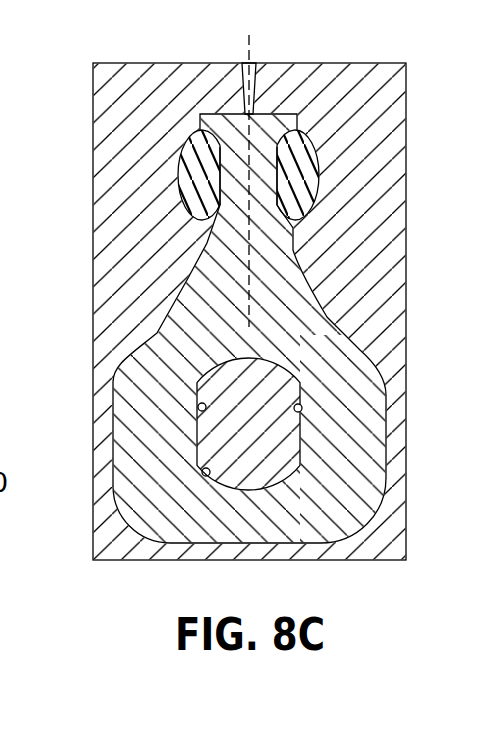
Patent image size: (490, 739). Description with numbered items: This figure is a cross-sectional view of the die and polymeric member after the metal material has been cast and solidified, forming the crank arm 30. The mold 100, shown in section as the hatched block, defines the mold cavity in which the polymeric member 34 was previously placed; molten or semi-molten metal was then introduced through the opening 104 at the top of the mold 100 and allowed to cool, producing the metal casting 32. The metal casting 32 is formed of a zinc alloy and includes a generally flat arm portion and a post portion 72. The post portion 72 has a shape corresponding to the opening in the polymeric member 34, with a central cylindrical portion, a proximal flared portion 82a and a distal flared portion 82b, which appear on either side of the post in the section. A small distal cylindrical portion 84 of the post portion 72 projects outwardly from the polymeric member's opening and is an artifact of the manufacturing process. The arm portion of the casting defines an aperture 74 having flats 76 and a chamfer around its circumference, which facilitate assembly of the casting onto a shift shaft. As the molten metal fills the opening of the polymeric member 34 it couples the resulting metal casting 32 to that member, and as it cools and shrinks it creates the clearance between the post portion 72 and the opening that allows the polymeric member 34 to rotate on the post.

The mold 100 is at (112, 55).
The opening 104 is at (243, 62).
The distal cylindrical portion 84 is at (312, 118).
The post portion 72 is at (232, 172).
The proximal flared portion 82a is at (180, 195).
The distal flared portion 82b is at (315, 135).
The polymeric member 34 is at (325, 178).
The crank arm 30 is at (358, 342).
The flats 76 is at (198, 405).
The metal casting 32 is at (309, 423).
The aperture 74 is at (202, 476).